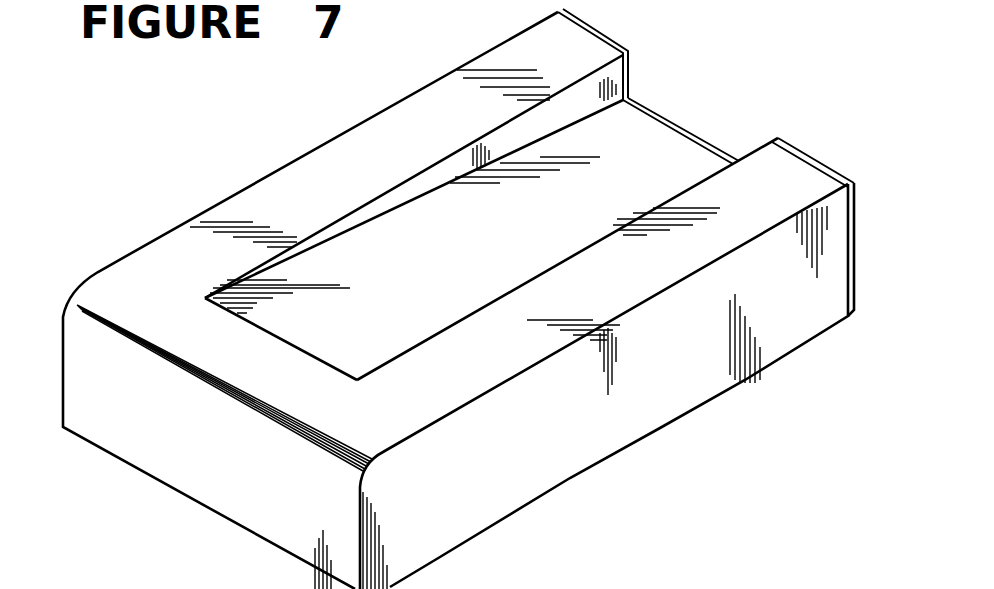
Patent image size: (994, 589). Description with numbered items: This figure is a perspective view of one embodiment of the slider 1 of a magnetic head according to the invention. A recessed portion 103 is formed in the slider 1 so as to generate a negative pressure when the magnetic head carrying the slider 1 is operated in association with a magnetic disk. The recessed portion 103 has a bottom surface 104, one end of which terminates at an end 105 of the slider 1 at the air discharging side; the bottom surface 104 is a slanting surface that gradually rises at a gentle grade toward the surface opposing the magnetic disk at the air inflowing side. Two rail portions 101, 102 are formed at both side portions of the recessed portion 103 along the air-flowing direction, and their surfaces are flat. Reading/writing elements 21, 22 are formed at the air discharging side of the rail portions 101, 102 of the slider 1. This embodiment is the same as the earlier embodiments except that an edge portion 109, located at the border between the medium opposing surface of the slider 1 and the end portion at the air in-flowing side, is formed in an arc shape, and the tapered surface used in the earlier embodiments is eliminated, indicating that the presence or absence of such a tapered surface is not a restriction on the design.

The slider 1 is at (650, 398).
The reading/writing element 21 is at (595, 33).
The reading/writing element 22 is at (812, 163).
The rail portion 101 is at (390, 150).
The rail portion 102 is at (748, 197).
The recessed portion 103 is at (608, 160).
The bottom surface 104 is at (243, 223).
The end of the slider 105 is at (680, 125).
The edge portion 109 is at (123, 313).